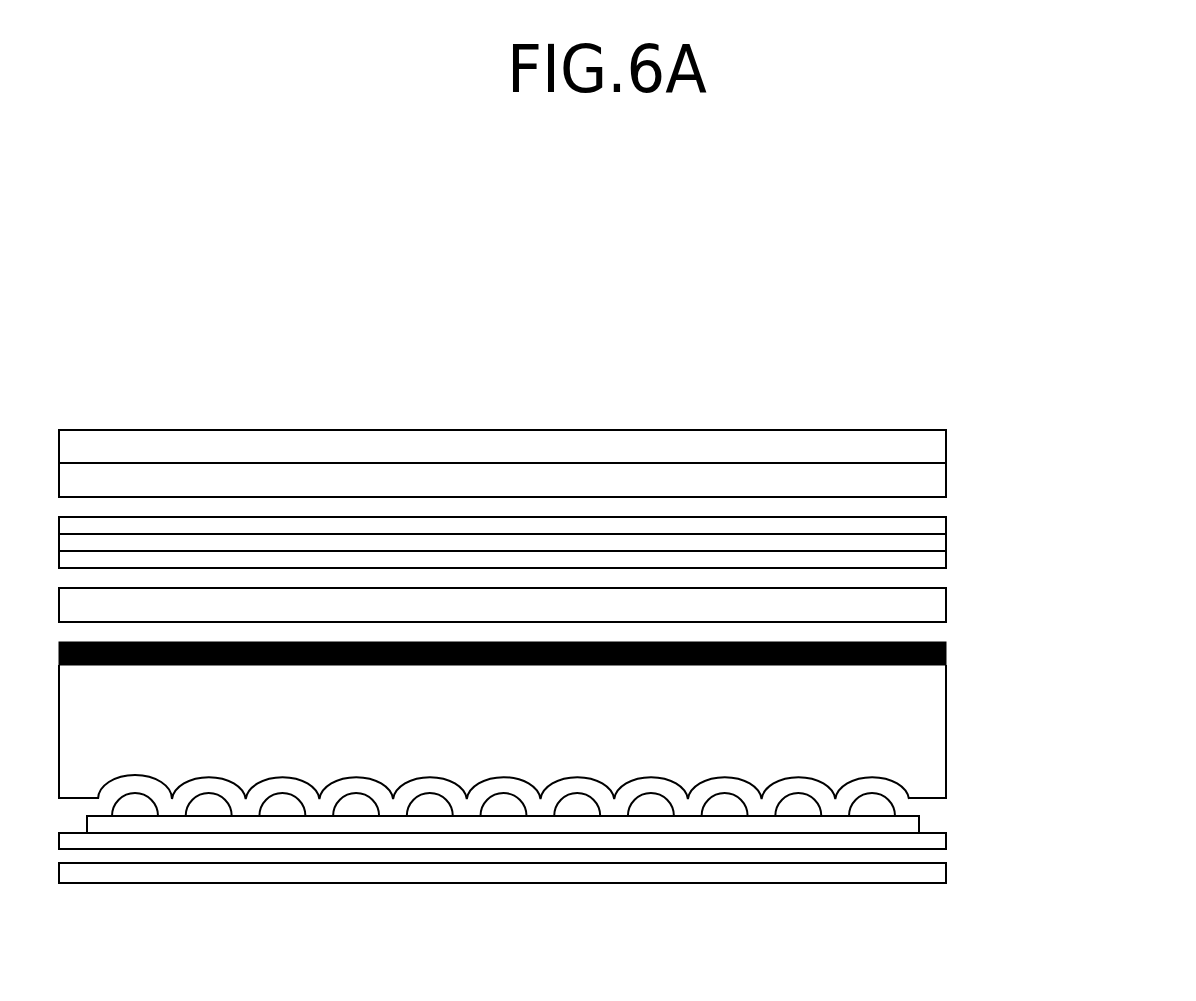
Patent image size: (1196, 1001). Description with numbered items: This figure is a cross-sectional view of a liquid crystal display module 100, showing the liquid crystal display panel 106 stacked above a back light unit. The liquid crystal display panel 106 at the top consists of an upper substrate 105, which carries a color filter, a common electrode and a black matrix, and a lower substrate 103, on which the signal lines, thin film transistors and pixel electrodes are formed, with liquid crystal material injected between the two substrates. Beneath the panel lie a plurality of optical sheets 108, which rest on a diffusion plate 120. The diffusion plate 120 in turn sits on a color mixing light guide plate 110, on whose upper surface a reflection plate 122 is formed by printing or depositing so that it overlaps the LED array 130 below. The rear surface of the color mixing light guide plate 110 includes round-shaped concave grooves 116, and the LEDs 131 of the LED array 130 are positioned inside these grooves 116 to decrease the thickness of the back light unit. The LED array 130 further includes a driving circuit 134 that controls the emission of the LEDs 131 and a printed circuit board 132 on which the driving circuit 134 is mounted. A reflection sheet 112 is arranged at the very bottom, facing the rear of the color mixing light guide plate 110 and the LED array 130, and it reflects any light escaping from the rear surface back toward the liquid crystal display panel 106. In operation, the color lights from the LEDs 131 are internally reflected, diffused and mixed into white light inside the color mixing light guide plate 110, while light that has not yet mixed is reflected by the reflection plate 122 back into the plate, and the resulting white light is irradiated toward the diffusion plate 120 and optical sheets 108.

The liquid crystal display module 100 is at (888, 316).
The liquid crystal display panel 106 is at (1073, 362).
The upper substrate 105 is at (935, 445).
The lower substrate 103 is at (935, 488).
The optical sheets 108 is at (935, 563).
The diffusion plate 120 is at (935, 608).
The reflection plates 122 is at (946, 650).
The color mixing light guide plate 110 is at (931, 696).
The grooves 116 is at (525, 778).
The LED array 130 is at (1080, 765).
The LEDs 131 is at (892, 808).
The driving circuit 134 is at (917, 822).
The printed circuit board 132 is at (942, 844).
The reflection sheet 112 is at (942, 872).